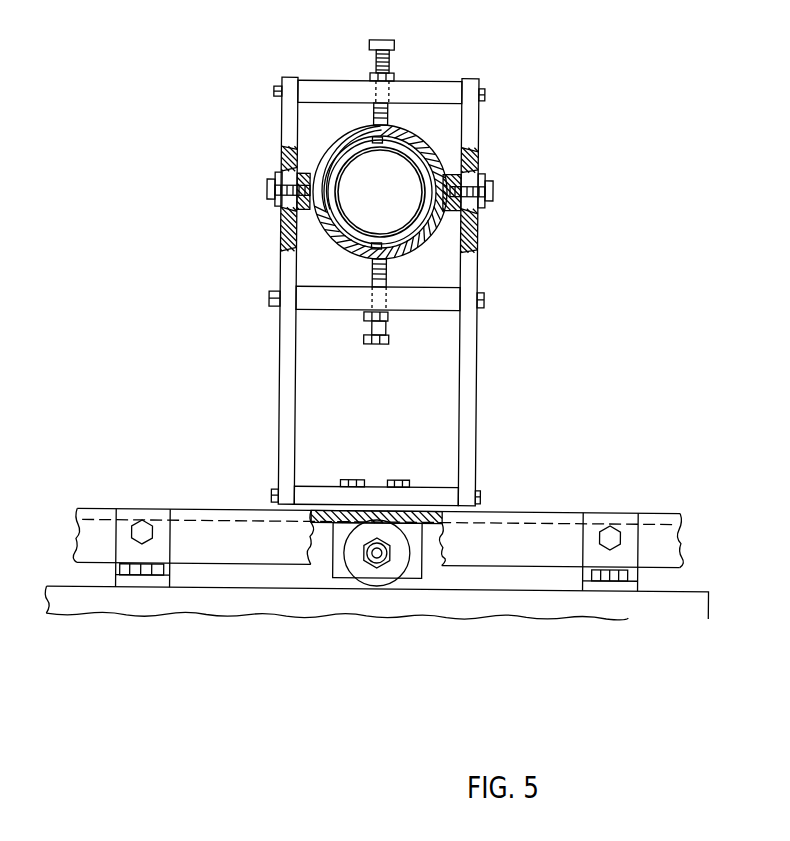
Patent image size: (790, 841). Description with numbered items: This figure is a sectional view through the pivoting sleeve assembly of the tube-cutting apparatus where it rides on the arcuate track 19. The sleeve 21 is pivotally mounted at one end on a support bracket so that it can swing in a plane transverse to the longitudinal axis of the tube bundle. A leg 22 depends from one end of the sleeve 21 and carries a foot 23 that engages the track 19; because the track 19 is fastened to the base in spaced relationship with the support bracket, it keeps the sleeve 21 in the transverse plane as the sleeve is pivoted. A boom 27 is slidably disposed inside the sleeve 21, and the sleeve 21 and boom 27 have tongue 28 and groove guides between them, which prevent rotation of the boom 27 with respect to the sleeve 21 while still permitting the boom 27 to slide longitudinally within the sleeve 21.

The arcuate track 19 is at (225, 536).
The sleeve 21 is at (363, 133).
The leg 22 is at (470, 360).
The foot 23 is at (345, 541).
The boom 27 is at (397, 153).
The tongue 28 is at (387, 126).